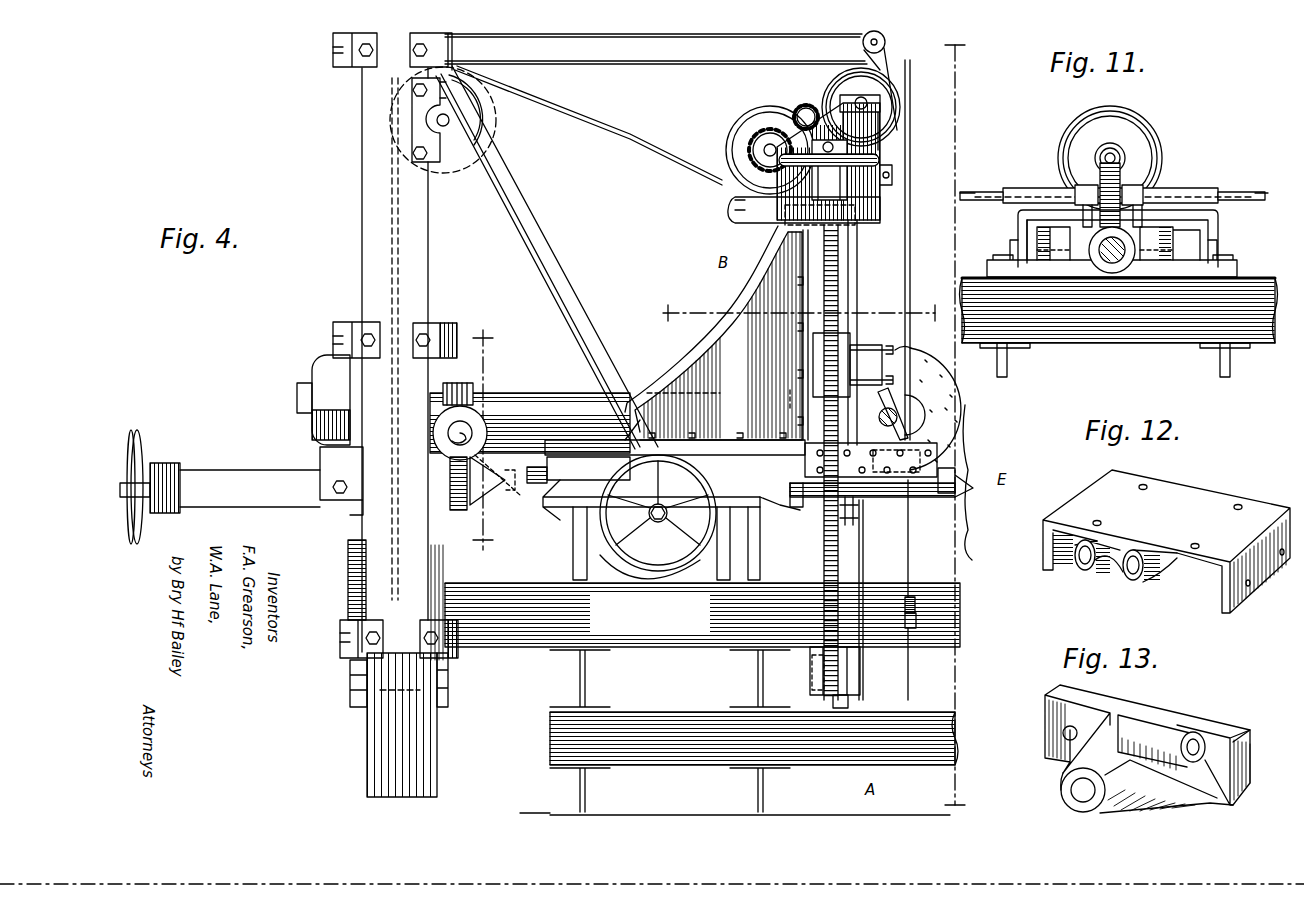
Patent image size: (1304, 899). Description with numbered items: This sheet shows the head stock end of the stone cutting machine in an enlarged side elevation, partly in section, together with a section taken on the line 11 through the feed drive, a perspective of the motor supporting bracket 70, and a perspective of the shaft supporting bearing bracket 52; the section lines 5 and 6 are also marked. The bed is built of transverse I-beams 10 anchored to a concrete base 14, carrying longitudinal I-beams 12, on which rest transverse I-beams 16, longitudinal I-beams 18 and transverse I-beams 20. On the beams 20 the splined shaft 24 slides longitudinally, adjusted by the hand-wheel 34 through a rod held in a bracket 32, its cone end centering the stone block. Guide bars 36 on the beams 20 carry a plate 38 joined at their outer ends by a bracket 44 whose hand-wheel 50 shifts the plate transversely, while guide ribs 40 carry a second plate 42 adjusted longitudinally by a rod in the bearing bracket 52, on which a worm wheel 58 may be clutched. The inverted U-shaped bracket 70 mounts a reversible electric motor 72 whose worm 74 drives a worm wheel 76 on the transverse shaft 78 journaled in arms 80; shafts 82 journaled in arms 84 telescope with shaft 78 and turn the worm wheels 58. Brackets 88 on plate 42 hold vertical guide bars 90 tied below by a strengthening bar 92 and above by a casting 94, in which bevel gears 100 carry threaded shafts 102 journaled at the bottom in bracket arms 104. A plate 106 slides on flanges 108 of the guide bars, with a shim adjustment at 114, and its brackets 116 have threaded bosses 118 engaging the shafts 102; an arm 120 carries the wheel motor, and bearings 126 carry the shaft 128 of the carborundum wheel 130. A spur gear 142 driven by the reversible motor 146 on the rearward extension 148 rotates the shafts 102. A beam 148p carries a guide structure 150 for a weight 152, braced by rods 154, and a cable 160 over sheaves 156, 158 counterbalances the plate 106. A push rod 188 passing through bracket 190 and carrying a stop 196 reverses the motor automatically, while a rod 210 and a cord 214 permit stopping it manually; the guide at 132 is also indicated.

In FIG. 4, the section line 5- 5 is at (953, 422).
In FIG. 4, the section line 6- 6 is at (797, 313).
In FIG. 4, the I-beams 10 is at (758, 795).
In FIG. 4, the section line 11- 11 is at (483, 437).
In FIG. 4, the I-beams 12 is at (754, 738).
In FIG. 4, the base of concrete 14 is at (535, 813).
In FIG. 4, the I-beams 16 is at (585, 685).
In FIG. 4, the I-beams 18 is at (702, 615).
In FIG. 11, the I-beams 18 is at (1010, 362).
In FIG. 4, the I-beams 20 is at (573, 566).
In FIG. 11, the I-beams 20 is at (1119, 310).
In FIG. 4, the shaft 24 is at (935, 500).
In FIG. 11, the shaft 24 is at (1112, 273).
In FIG. 4, the bracket 32 is at (225, 470).
In FIG. 11, the bracket 32 is at (1195, 245).
In FIG. 4, the hand-wheel 34 is at (143, 445).
In FIG. 4, the guide bars 36 is at (555, 515).
In FIG. 4, the plate 38 is at (718, 490).
In FIG. 4, the guide ribs 40 is at (578, 470).
In FIG. 4, the second plate 42 is at (620, 428).
In FIG. 4, the bracket 44 is at (672, 520).
In FIG. 4, the hand-wheel 50 is at (650, 568).
In FIG. 4, the bearing bracket 52 is at (500, 495).
In FIG. 13, the bearing bracket 52 is at (1110, 697).
In FIG. 4, the worm wheel 58 is at (453, 495).
In FIG. 4, the motor supporting bracket 70 is at (320, 450).
In FIG. 11, the motor supporting bracket 70 is at (1018, 233).
In FIG. 12, the motor supporting bracket 70 is at (1183, 496).
In FIG. 4, the reversible electric motor 72 is at (318, 356).
In FIG. 11, the reversible electric motor 72 is at (1123, 110).
In FIG. 4, the worm 74 is at (458, 383).
In FIG. 11, the worm 74 is at (1128, 155).
In FIG. 4, the worm wheel 76 is at (478, 410).
In FIG. 11, the worm wheel 76 is at (1100, 170).
In FIG. 11, the transverse shaft 78 is at (1215, 190).
In FIG. 11, the bearing carrying arms 80 is at (1058, 186).
In FIG. 12, the bearing carrying arms 80 is at (1066, 567).
In FIG. 11, the shafts 82 is at (975, 190).
In FIG. 4, the bearing carrying arms 84 is at (530, 470).
In FIG. 13, the bearing carrying arms 84 is at (1190, 722).
In FIG. 4, the brackets 88 is at (660, 374).
In FIG. 4, the guide bars 90 is at (864, 580).
In FIG. 4, the transverse strengthening bar 92 is at (812, 678).
In FIG. 4, the casting 94 is at (820, 215).
In FIG. 4, the bevel gear 100 is at (882, 150).
In FIG. 4, the threaded shaft 102 is at (843, 273).
In FIG. 4, the bracket arms 104 is at (850, 702).
In FIG. 4, the plate 106 is at (867, 420).
In FIG. 4, the flanges 108 is at (860, 664).
In FIG. 4, the shim adjustment 114 is at (858, 505).
In FIG. 4, the brackets 116 is at (860, 348).
In FIG. 4, the threaded bosses 118 is at (813, 355).
In FIG. 4, the arm 120 is at (808, 466).
In FIG. 4, the bearings 126 is at (905, 400).
In FIG. 4, the shaft 128 is at (910, 420).
In FIG. 4, the carborundum wheel 130 is at (958, 400).
In FIG. 4, the guide 132 is at (800, 398).
In FIG. 4, the spur gear 142 is at (806, 105).
In FIG. 4, the reversible electric motor 146 is at (745, 141).
In FIG. 4, the rearward extension 148 is at (575, 395).
In FIG. 4, the beam 148p is at (728, 210).
In FIG. 4, the guide structure 150 is at (362, 167).
In FIG. 4, the weight 152 is at (348, 572).
In FIG. 4, the brace rods 154 is at (600, 120).
In FIG. 4, the sheave 156 is at (495, 130).
In FIG. 4, the sheave 158 is at (880, 82).
In FIG. 4, the cable 160 is at (750, 64).
In FIG. 4, the push rod 188 is at (910, 574).
In FIG. 4, the bracket 190 is at (905, 365).
In FIG. 4, the stop 196 is at (912, 630).
In FIG. 4, the rod 210 is at (912, 230).
In FIG. 4, the cord 214 is at (565, 34).